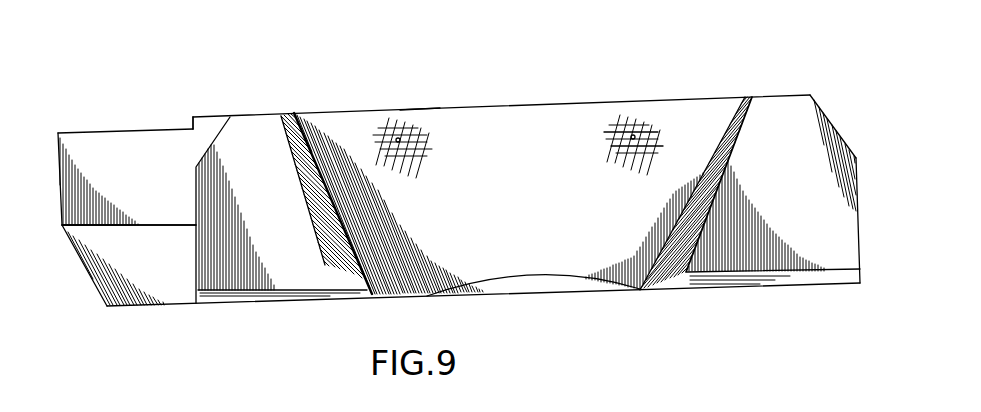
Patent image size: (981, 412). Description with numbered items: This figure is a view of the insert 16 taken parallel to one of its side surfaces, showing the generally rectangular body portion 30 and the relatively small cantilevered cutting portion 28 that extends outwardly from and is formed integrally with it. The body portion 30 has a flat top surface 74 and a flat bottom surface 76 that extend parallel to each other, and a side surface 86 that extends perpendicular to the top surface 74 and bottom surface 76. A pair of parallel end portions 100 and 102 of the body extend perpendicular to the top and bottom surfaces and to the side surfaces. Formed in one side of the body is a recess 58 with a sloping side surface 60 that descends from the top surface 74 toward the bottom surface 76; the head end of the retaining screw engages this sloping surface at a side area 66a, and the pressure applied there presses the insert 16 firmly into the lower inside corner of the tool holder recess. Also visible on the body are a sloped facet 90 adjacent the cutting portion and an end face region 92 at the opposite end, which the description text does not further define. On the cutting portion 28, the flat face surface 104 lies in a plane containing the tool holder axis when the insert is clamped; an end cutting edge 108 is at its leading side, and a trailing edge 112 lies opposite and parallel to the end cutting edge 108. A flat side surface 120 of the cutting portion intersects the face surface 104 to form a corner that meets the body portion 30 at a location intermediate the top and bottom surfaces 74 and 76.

The insert 16 is at (867, 26).
The cantilevered cutting portion 28 is at (68, 126).
The body portion 30 is at (793, 292).
The recess 58 is at (549, 308).
The sloping side surface 60 is at (607, 120).
The side area 66a is at (398, 138).
The top surface 74 is at (423, 110).
The bottom surface 76 is at (303, 300).
The side surface 86 is at (858, 154).
The sloped facet 90 is at (263, 125).
The end face 92 is at (840, 247).
The end portion 100 is at (195, 273).
The end portion 102 is at (868, 180).
The face surface 104 is at (158, 150).
The end cutting edge 108 is at (117, 130).
The trailing edge 112 is at (147, 222).
The flat side surface 120 is at (92, 275).